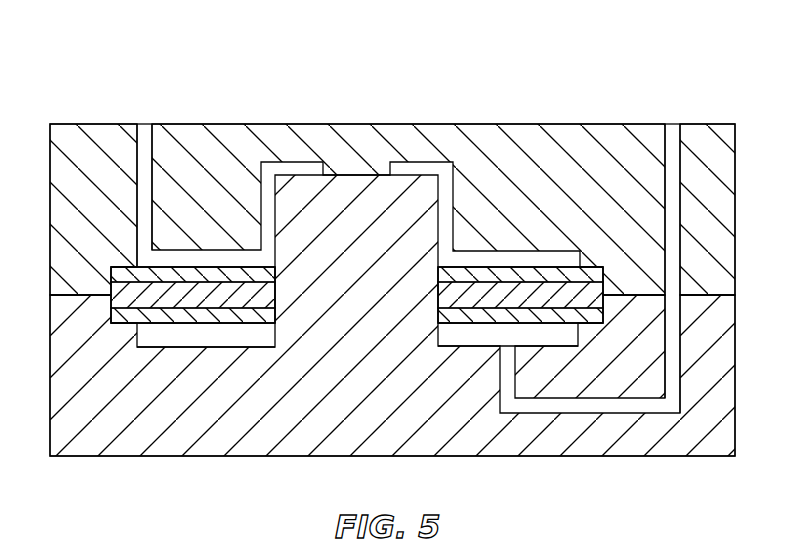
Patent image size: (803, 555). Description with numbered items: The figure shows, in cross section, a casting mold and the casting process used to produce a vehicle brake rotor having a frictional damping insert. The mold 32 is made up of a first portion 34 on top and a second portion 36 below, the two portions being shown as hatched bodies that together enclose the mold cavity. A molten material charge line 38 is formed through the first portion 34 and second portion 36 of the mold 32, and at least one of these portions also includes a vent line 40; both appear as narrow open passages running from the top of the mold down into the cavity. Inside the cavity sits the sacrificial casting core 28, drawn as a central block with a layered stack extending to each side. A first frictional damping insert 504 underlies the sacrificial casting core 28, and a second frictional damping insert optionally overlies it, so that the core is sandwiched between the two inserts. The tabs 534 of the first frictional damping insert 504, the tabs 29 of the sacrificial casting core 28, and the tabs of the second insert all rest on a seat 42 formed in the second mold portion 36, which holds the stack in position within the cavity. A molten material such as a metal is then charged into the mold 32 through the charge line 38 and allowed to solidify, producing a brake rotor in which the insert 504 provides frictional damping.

The mold 32 is at (689, 66).
The first portion 34 is at (734, 150).
The second portion 36 is at (736, 395).
The molten material charge line 38 is at (678, 131).
The vent line 40 is at (152, 129).
The tabs 29 is at (110, 292).
The sacrificial casting core 28 is at (537, 292).
The first frictional damping insert 504 is at (110, 302).
The tabs 534 is at (117, 335).
The seat 42 is at (128, 325).